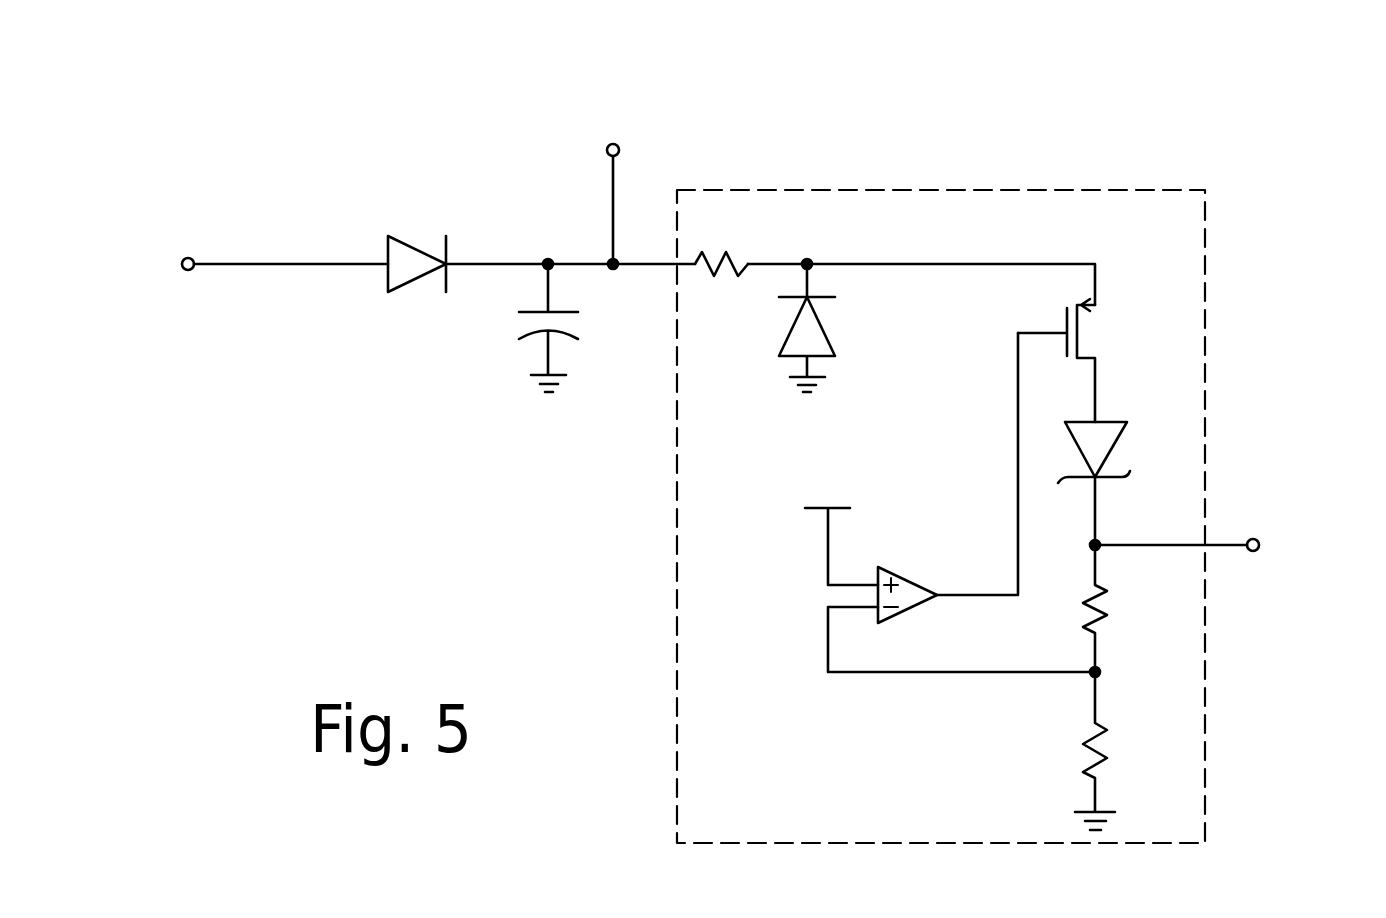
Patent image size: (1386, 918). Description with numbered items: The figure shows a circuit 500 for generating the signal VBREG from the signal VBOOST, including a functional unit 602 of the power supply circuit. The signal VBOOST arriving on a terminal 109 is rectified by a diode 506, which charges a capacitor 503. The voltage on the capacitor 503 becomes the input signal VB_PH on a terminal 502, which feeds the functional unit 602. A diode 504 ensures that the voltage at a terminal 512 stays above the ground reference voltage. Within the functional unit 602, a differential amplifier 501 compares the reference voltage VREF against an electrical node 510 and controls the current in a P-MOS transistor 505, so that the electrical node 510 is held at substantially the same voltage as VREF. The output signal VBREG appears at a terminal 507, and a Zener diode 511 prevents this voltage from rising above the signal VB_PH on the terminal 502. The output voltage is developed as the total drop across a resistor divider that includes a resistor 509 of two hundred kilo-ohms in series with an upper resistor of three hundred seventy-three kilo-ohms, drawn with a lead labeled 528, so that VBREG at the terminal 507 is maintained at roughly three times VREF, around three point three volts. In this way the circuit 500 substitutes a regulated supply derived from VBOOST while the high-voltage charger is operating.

The circuit 500 is at (857, 113).
The terminal 109 is at (300, 266).
The diode 506 is at (416, 244).
The capacitor 503 is at (610, 327).
The terminal 502 is at (613, 190).
The functional unit 602 is at (1150, 190).
The terminal 512 is at (917, 264).
The diode 504 is at (822, 325).
The P-MOS transistor 505 is at (1080, 335).
The Zener diode 511 is at (1112, 445).
The terminal 507 is at (1228, 546).
The feedback resistor 373K 528 is at (1083, 612).
The electrical node 510 is at (1097, 705).
The resistor 509 is at (1085, 755).
The differential amplifier 501 is at (893, 624).